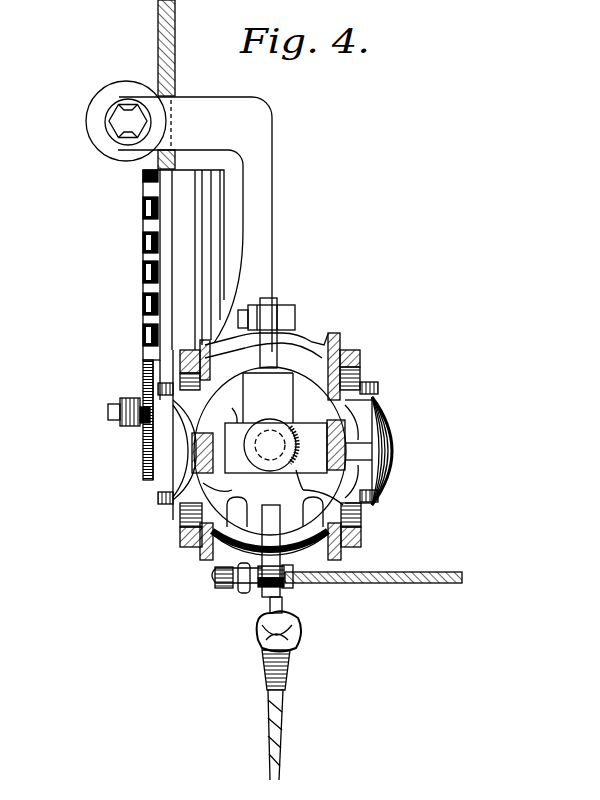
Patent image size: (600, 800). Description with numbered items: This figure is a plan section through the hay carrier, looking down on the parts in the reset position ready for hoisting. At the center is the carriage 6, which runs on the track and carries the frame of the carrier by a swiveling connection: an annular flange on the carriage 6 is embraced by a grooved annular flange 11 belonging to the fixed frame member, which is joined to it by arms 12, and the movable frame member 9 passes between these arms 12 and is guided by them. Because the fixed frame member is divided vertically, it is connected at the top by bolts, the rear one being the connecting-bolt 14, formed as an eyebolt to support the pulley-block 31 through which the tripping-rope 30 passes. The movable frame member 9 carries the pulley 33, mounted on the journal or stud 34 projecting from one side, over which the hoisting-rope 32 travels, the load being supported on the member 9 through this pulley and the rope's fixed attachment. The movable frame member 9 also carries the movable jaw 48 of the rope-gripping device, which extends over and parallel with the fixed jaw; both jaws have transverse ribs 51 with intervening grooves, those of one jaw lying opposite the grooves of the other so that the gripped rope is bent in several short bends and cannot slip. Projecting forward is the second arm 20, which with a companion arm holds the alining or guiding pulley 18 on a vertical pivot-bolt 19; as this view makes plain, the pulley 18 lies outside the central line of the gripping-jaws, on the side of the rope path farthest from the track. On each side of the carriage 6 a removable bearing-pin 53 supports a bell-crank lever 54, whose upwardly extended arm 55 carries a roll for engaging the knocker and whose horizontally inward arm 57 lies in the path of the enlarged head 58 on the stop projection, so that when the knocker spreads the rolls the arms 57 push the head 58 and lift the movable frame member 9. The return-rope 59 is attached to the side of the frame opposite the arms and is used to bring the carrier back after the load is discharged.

The carriage 6 is at (357, 361).
The movable frame member 9 is at (231, 407).
The grooved annular flange 11 is at (303, 344).
The arms 12 is at (248, 401).
The connecting-bolt 14 is at (213, 583).
The alining or guiding pulley 18 is at (96, 132).
The pivot-bolt 19 is at (120, 116).
The second arm 20 is at (127, 147).
The tripping-rope 30 is at (452, 567).
The pulley-block 31 is at (239, 590).
The hoisting-rope 32 is at (177, 68).
The pulley 33 is at (153, 490).
The journal or stud 34 is at (108, 408).
The movable jaw 48 is at (195, 187).
The transverse ribs 51 is at (140, 298).
The removable bearing-pin 53 is at (380, 384).
The bell-crank lever 54 is at (390, 425).
The arm 55 is at (355, 461).
The arm 57 is at (303, 430).
The enlarged head 58 is at (273, 478).
The return-rope 59 is at (283, 717).